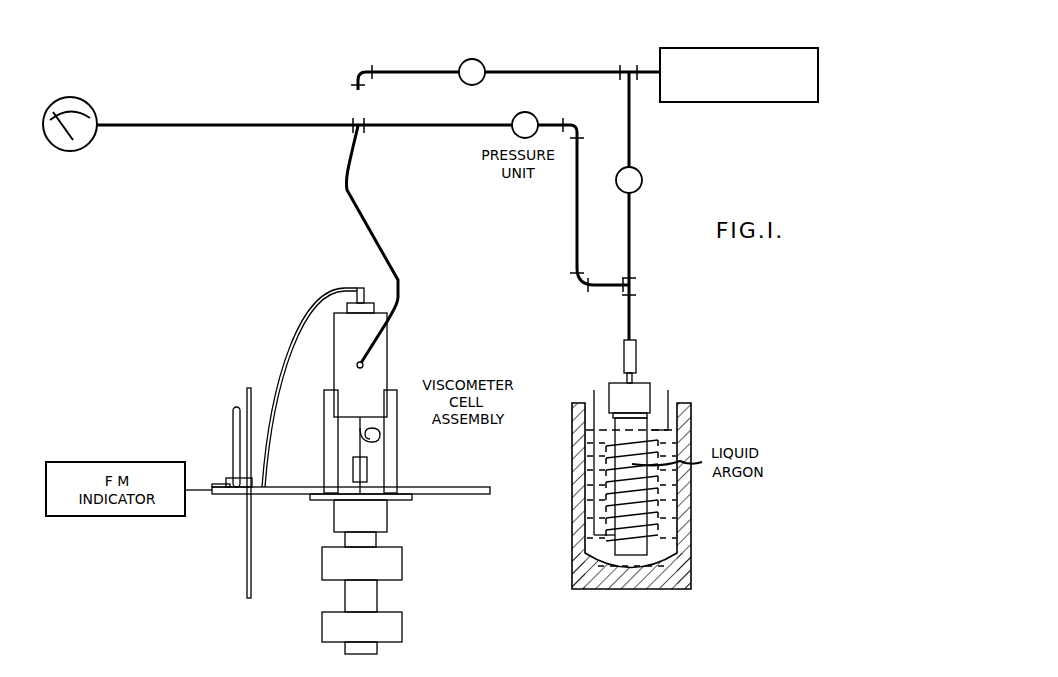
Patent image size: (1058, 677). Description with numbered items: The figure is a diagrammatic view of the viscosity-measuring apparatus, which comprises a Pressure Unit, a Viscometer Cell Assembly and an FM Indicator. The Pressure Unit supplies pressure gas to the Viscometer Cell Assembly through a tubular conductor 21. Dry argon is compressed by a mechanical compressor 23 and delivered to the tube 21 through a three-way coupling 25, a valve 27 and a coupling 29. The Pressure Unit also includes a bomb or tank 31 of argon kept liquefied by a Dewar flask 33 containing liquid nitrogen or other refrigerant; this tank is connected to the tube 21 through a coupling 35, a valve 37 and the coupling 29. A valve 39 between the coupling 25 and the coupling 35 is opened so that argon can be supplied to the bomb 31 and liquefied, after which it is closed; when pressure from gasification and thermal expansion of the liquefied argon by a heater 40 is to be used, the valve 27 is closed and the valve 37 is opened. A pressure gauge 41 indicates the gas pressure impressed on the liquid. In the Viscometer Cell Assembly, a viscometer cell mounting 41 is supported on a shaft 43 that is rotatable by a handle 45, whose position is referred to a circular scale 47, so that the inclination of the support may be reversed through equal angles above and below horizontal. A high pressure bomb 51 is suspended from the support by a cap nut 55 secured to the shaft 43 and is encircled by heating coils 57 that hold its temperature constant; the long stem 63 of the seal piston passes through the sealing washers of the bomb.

The tubular conductor 21 is at (380, 236).
The mechanical compressor 23 is at (713, 48).
The three-way coupling 25 is at (621, 65).
The valve 27 is at (468, 59).
The coupling 29 is at (353, 123).
The bomb or tank 31 is at (615, 550).
The Dewar flask 33 is at (575, 458).
The coupling 35 is at (632, 285).
The valve 37 is at (534, 116).
The valve 39 is at (643, 177).
The heater 40 is at (650, 532).
The pressure gauge 41 is at (97, 112).
The shaft 43 is at (294, 487).
The handle 45 is at (232, 430).
The circular scale 47 is at (247, 392).
The high pressure bomb 51 is at (380, 594).
The cap nut 55 is at (380, 520).
The heating coils 57 is at (396, 563).
The piston stem 63 is at (366, 487).